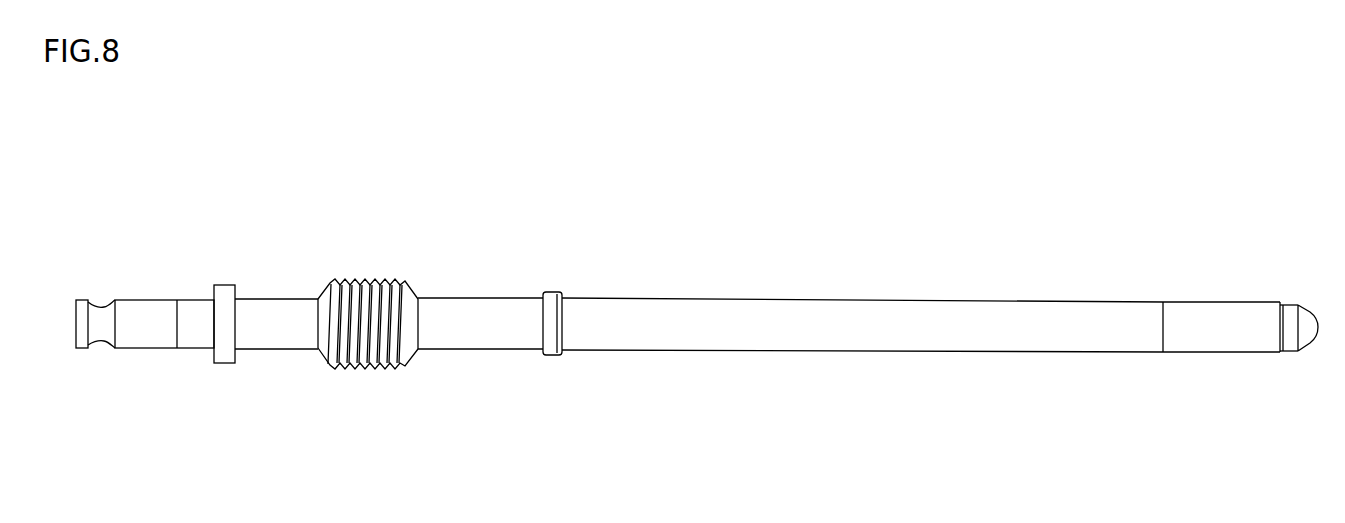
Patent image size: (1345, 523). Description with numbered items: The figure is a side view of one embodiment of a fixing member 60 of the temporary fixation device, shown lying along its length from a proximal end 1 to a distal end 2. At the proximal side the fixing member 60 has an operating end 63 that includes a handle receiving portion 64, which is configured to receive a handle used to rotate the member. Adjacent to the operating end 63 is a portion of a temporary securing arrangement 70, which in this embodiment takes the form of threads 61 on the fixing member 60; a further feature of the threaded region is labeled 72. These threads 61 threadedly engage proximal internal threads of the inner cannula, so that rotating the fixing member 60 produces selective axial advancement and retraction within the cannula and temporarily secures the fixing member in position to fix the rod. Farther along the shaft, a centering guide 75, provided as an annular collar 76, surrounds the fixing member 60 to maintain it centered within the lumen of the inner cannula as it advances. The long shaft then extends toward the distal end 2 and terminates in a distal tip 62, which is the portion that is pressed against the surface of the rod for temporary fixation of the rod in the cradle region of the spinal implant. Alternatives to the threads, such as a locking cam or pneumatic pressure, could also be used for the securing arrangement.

The proximal end 1 is at (348, 222).
The distal end 2 is at (1171, 233).
The fixing member 60 is at (740, 250).
The threads 61 is at (367, 279).
The distal tip 62 is at (1318, 330).
The operating end 63 is at (134, 349).
The handle receiving portion 64 is at (133, 297).
The temporary securing arrangement 70 is at (360, 368).
The thread root 72 is at (388, 368).
The centering guide 75 is at (550, 291).
The annular collar 76 is at (550, 356).